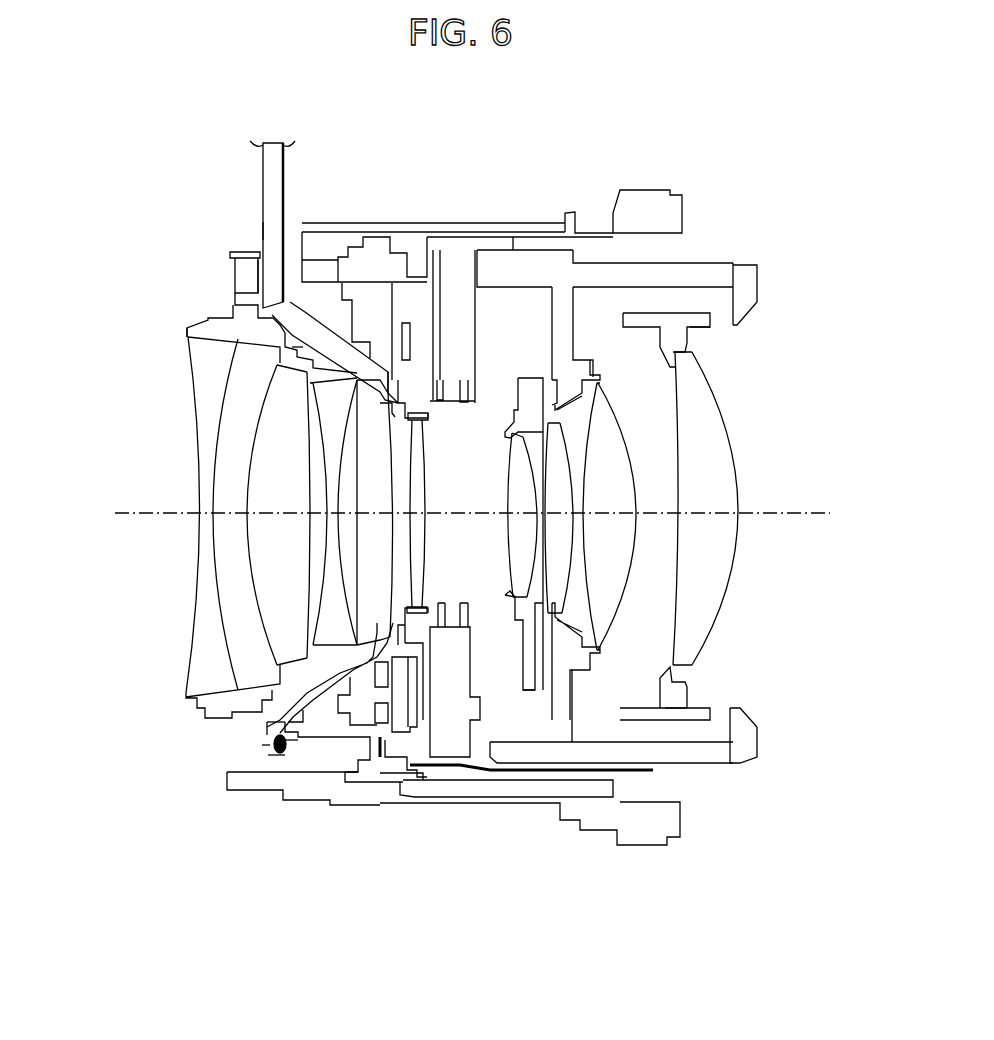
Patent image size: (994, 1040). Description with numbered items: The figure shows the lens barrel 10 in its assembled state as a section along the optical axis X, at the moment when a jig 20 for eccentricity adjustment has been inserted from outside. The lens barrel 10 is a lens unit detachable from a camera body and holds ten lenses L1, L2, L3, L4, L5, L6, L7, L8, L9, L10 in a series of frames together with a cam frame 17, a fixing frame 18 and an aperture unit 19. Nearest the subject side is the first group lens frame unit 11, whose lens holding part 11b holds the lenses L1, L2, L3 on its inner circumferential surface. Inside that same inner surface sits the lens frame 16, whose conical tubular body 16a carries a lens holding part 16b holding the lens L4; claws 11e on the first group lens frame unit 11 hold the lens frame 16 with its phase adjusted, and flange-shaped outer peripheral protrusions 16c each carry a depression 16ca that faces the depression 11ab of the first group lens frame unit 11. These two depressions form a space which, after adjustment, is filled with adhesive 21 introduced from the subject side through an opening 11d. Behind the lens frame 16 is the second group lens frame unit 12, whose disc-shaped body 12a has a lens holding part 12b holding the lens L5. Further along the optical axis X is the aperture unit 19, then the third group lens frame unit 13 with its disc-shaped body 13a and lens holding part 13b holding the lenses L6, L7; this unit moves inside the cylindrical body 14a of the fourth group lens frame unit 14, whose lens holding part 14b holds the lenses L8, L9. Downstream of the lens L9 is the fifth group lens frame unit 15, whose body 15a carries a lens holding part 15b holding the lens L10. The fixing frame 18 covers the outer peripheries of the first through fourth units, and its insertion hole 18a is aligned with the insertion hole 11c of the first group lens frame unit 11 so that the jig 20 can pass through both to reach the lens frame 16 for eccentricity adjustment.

The lens barrel 10 is at (128, 238).
The first group lens frame unit 11 is at (188, 265).
The depression 11ab is at (275, 753).
The lens holding part 11b is at (213, 698).
The insertion hole 11c is at (275, 257).
The opening 11d is at (262, 746).
The claw 11e is at (290, 732).
The second group lens frame unit 12 is at (416, 298).
The body 12a is at (420, 363).
The lens holding part 12b is at (420, 415).
The third group lens frame unit 13 is at (528, 380).
The body 13a is at (537, 680).
The lens holding part 13b is at (537, 610).
The fourth group lens frame unit 14 is at (594, 258).
The body 14a is at (530, 268).
The lens holding part 14b is at (600, 376).
The fifth group lens frame unit 15 is at (700, 315).
The body 15a is at (705, 322).
The lens holding part 15b is at (688, 682).
The lens frame 16 is at (290, 308).
The body 16a is at (340, 350).
The lens holding part 16b is at (392, 373).
The outer peripheral protrusion 16c is at (267, 728).
The depression 16ca is at (268, 733).
The cam frame 17 is at (430, 787).
The fixing frame 18 is at (385, 790).
The insertion hole 18a is at (275, 230).
The aperture unit 19 is at (458, 737).
The jig 20 is at (272, 158).
The adhesive 21 is at (280, 755).
The optical axis X is at (155, 513).
The lens L1 is at (205, 455).
The lens L2 is at (290, 440).
The lens L3 is at (335, 420).
The lens L4 is at (375, 548).
The lens L5 is at (428, 498).
The lens L6 is at (528, 565).
The lens L7 is at (548, 541).
The lens L8 is at (585, 500).
The lens L9 is at (610, 458).
The lens L10 is at (685, 373).